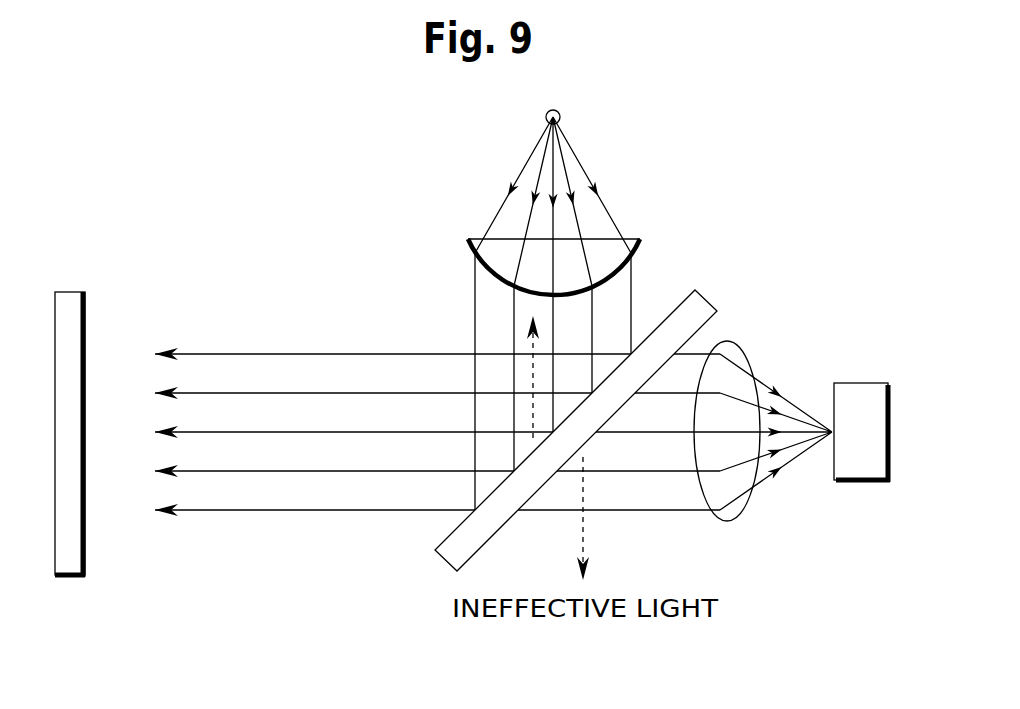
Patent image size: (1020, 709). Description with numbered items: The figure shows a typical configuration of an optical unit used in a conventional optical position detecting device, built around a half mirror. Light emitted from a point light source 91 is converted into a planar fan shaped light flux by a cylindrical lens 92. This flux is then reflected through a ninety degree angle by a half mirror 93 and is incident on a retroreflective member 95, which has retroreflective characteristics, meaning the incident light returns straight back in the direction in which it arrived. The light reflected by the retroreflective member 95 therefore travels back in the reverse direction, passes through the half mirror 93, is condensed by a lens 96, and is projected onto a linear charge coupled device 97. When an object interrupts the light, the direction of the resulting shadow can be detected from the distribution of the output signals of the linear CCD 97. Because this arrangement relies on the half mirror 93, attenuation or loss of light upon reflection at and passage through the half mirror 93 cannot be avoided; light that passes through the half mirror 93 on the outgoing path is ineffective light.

The point light source 91 is at (560, 113).
The cylindrical lens 92 is at (634, 239).
The half mirror 93 is at (703, 299).
The retroreflective member 95 is at (77, 542).
The lens 96 is at (733, 511).
The linear charge coupled device (CCD) 97 is at (855, 472).